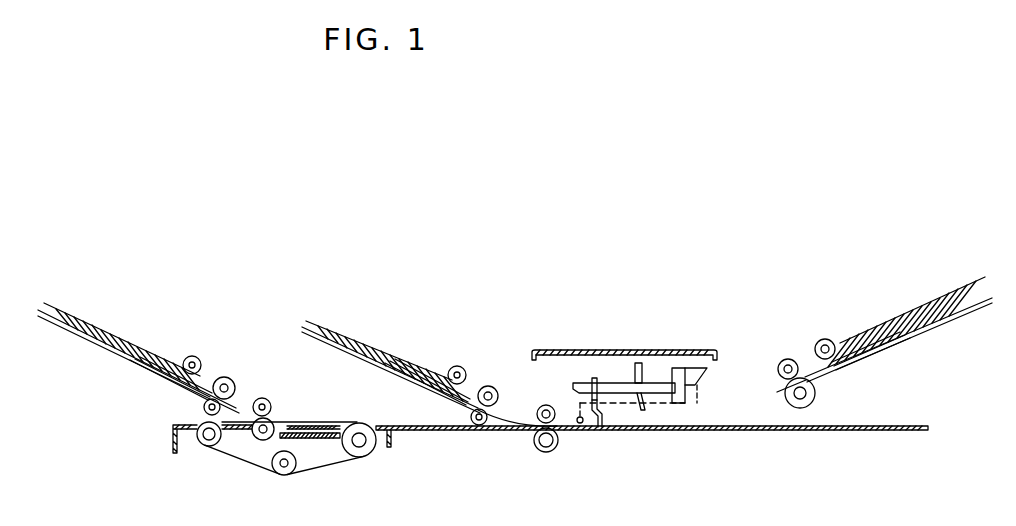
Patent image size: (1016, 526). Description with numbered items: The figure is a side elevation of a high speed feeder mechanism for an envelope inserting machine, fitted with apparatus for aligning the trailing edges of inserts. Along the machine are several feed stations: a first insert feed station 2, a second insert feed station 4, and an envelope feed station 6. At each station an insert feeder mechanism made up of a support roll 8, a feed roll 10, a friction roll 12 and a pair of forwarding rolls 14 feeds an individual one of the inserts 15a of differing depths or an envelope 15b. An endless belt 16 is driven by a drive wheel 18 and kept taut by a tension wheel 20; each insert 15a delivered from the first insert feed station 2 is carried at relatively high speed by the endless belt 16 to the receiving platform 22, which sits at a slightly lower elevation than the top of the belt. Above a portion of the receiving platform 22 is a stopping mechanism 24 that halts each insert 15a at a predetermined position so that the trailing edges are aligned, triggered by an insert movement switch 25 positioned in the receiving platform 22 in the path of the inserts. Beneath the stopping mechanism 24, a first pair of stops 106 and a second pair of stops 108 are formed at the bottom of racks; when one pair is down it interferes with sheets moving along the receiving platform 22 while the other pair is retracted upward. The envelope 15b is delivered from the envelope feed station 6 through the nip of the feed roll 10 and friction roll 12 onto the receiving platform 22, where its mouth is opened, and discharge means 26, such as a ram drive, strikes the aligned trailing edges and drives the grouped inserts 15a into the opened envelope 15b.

The first insert feed station 2 is at (114, 312).
The second insert feed station 4 is at (378, 322).
The envelope feed station 6 is at (881, 297).
The support roll 8 is at (200, 358).
The feed roll 10 is at (233, 380).
The friction roll 12 is at (204, 407).
The forwarding rolls 14 is at (280, 400).
The inserts 15a is at (153, 334).
The envelope 15b is at (852, 322).
The endless belt 16 is at (248, 466).
The drive wheel 18 is at (372, 453).
The tension wheel 20 is at (208, 446).
The receiving platform 22 is at (693, 433).
The stopping mechanism 24 is at (624, 364).
The insert movement switch 25 is at (579, 433).
The discharge means 26 is at (323, 449).
The first pair of stops 106 is at (605, 418).
The second pair of stops 108 is at (652, 404).